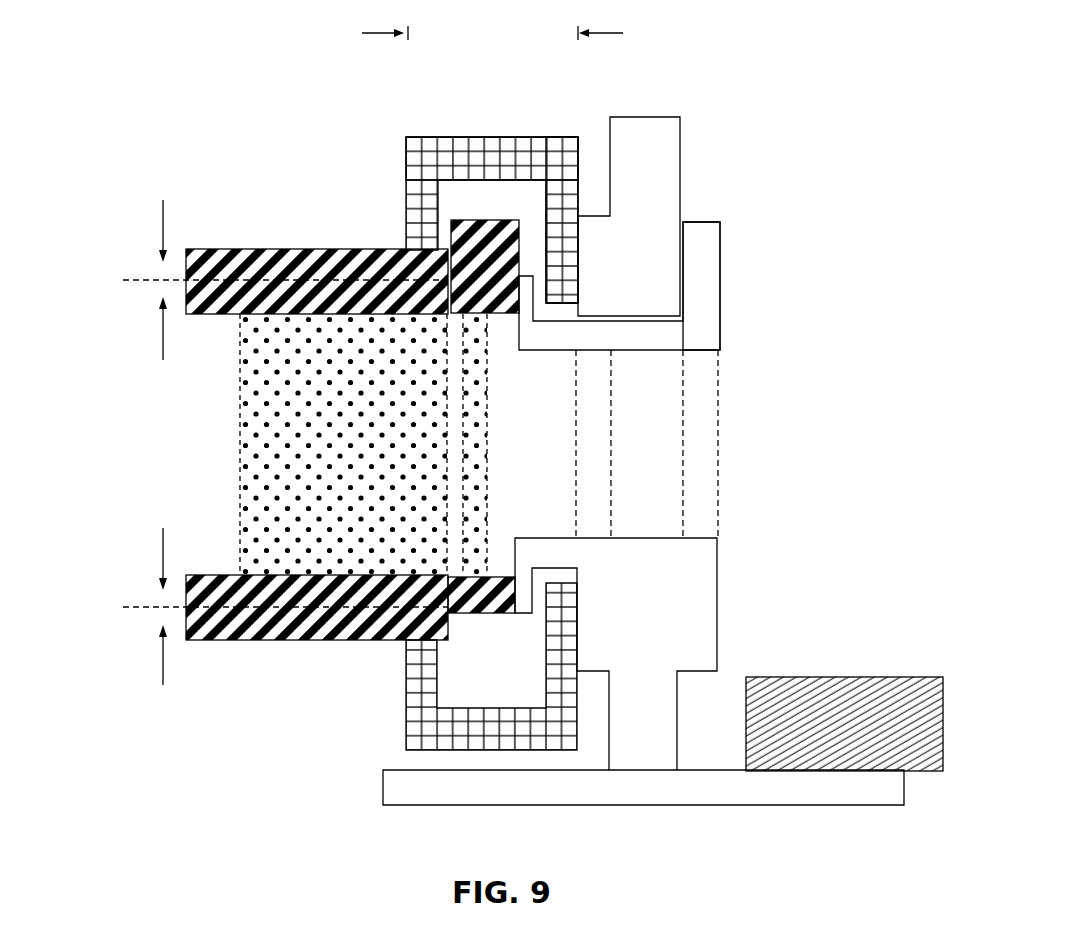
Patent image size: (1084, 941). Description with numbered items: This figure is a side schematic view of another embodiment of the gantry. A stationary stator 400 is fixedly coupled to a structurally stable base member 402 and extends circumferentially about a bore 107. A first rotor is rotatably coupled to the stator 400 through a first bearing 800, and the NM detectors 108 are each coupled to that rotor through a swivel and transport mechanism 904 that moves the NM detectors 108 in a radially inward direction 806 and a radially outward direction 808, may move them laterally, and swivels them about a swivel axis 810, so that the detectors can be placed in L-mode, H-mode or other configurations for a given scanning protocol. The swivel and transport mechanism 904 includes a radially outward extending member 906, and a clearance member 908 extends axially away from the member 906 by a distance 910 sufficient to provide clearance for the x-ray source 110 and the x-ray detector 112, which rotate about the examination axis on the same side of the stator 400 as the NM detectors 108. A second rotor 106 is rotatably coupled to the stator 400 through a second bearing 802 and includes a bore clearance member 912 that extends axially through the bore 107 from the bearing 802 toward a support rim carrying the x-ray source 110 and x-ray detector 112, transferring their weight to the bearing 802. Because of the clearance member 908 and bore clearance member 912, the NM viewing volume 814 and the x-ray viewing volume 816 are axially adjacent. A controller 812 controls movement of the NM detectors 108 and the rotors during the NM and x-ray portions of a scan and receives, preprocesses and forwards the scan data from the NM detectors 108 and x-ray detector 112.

The rotor 106 is at (700, 222).
The bore 107 is at (734, 466).
The NM detectors 108 is at (318, 249).
The x-ray source 110 is at (470, 220).
The x-ray detector 112 is at (480, 613).
The stator 400 is at (643, 117).
The base member 402 is at (450, 805).
The first bearing 800 is at (575, 302).
The second bearing 802 is at (680, 265).
The radially inward direction 806 is at (162, 223).
The radially outward direction 808 is at (162, 330).
The swivel axis 810 is at (132, 280).
The controller 812 is at (843, 677).
The NM viewing volume 814 is at (240, 384).
The x-ray viewing volume 816 is at (476, 493).
The swivel and transport mechanism 904 is at (407, 185).
The radially outward extending member 906 is at (524, 143).
The clearance member 908 is at (493, 137).
The distance 910 is at (604, 33).
The bore clearance member 912 is at (625, 352).